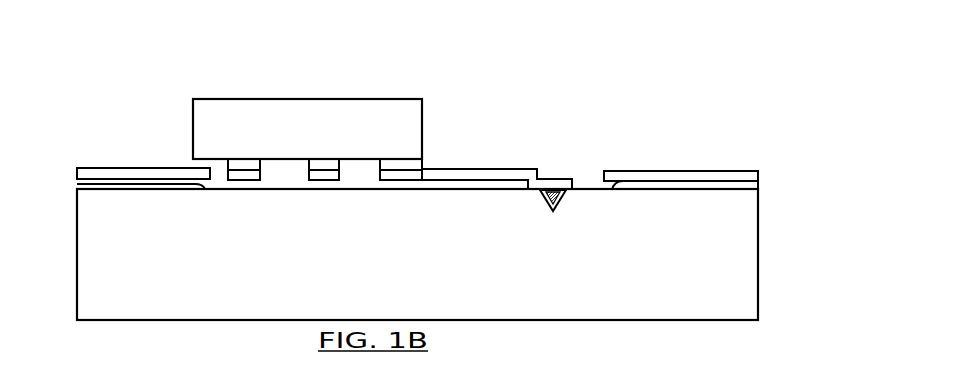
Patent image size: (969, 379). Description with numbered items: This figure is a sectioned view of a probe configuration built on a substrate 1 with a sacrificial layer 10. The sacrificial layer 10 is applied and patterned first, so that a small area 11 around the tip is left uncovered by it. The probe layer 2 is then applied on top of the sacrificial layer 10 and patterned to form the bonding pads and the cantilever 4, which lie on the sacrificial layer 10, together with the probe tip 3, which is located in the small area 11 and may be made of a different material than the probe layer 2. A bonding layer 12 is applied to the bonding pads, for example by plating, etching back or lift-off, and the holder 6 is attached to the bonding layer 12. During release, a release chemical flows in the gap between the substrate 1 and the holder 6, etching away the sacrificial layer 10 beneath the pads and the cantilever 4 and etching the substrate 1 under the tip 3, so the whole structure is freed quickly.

The substrate 1 is at (738, 287).
The probe layer 2 is at (745, 175).
The probe tip 3 is at (558, 203).
The cantilever 4 is at (495, 172).
The holder 6 is at (211, 118).
The sacrificial layer 10 is at (753, 186).
The small area around the tip 11 is at (530, 193).
The bonding layer 12 is at (250, 167).